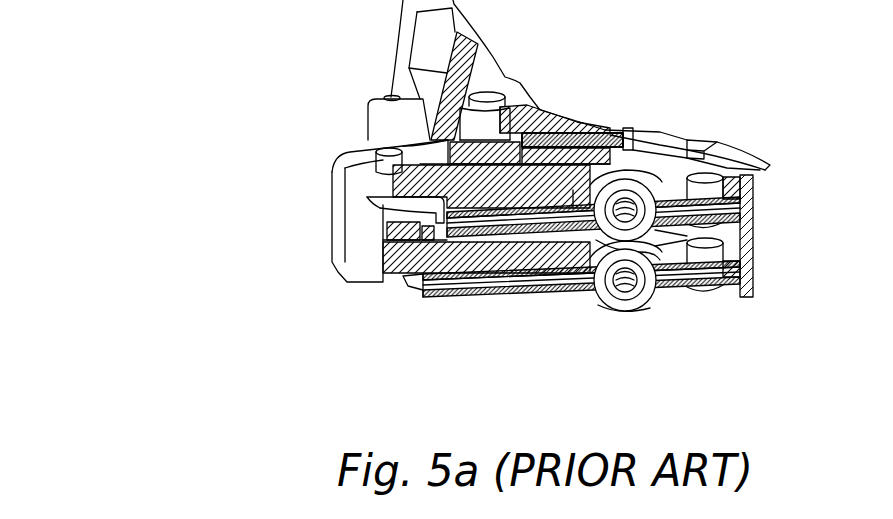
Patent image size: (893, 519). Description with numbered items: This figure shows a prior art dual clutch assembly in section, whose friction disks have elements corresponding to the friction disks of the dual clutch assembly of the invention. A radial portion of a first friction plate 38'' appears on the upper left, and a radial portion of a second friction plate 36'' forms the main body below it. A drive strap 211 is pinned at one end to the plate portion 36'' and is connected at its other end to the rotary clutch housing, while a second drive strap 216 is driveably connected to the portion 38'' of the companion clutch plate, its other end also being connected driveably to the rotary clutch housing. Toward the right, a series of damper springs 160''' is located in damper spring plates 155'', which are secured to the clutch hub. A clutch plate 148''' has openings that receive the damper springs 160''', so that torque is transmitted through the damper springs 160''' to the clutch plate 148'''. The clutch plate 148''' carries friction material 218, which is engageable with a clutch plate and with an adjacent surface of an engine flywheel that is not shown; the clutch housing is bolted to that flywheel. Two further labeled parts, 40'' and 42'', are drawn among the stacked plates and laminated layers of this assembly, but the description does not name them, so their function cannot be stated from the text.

The second friction plate 36'' is at (461, 176).
The first friction plate 38'' is at (329, 147).
The clamp plate 40'' is at (579, 130).
The laminate strip 42'' is at (581, 334).
The clutch plate 148''' is at (571, 340).
The damper spring plates 155'' is at (704, 295).
The damper springs 160''' is at (621, 329).
The drive strap 211 is at (387, 229).
The second drive strap 216 is at (367, 205).
The friction material 218 is at (550, 293).